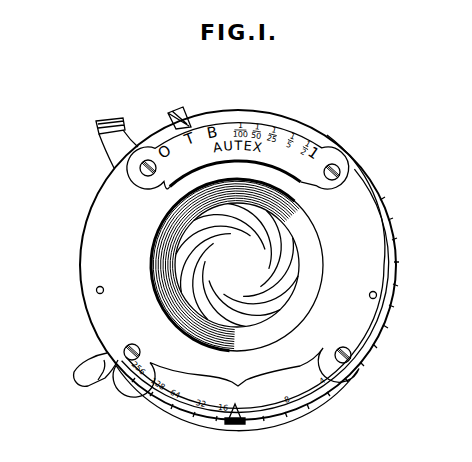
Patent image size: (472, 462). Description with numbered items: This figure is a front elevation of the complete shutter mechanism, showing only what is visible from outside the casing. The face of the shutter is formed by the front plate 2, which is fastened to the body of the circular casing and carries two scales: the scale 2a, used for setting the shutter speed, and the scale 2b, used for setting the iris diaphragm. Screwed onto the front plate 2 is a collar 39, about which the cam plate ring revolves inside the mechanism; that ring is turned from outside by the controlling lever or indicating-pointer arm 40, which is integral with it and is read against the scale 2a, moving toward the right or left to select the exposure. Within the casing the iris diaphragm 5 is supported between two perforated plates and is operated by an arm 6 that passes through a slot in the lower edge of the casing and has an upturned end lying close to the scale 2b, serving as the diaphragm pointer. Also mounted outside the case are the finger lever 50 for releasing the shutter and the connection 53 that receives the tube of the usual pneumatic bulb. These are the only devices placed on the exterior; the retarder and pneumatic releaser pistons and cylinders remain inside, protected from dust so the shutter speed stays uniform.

The front plate 2 is at (238, 265).
The scale 2a is at (266, 128).
The scale 2b is at (265, 398).
The iris diaphragm 5 is at (185, 270).
The arm 6 is at (226, 420).
The collar 39 is at (302, 302).
The controlling lever or indicating-pointer arm 40 is at (183, 108).
The finger lever 50 is at (105, 120).
The connection 53 is at (92, 383).